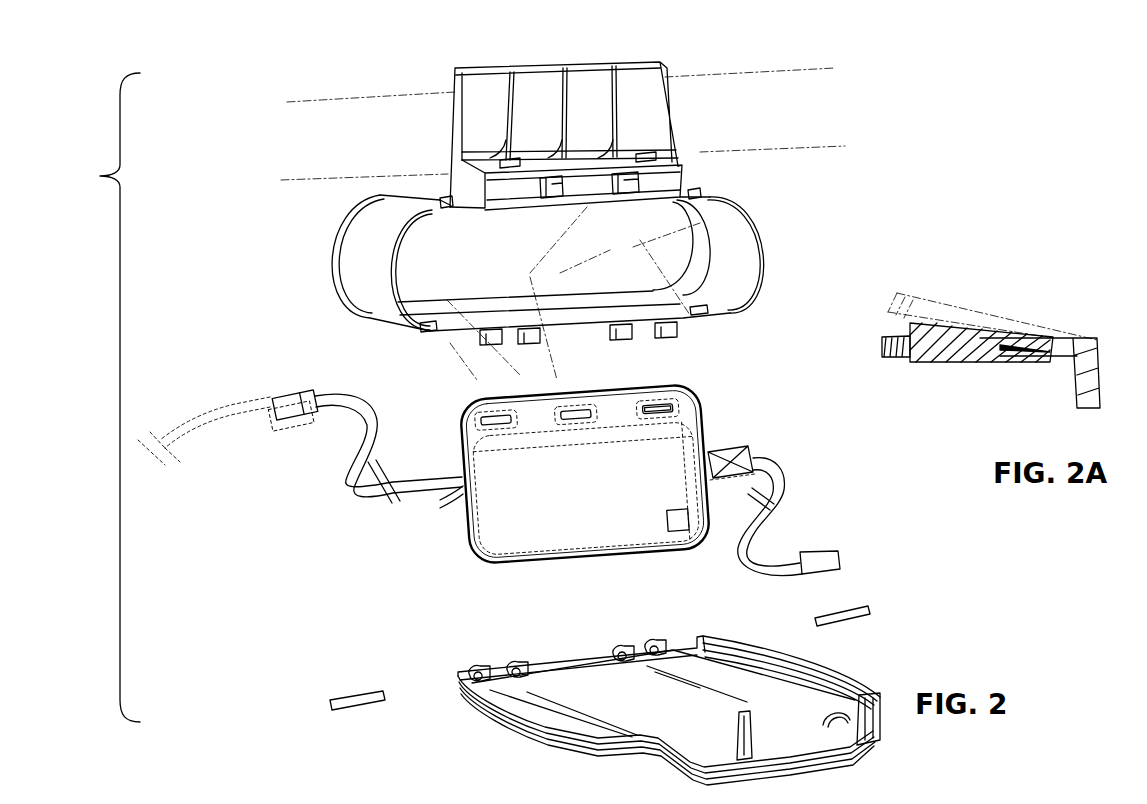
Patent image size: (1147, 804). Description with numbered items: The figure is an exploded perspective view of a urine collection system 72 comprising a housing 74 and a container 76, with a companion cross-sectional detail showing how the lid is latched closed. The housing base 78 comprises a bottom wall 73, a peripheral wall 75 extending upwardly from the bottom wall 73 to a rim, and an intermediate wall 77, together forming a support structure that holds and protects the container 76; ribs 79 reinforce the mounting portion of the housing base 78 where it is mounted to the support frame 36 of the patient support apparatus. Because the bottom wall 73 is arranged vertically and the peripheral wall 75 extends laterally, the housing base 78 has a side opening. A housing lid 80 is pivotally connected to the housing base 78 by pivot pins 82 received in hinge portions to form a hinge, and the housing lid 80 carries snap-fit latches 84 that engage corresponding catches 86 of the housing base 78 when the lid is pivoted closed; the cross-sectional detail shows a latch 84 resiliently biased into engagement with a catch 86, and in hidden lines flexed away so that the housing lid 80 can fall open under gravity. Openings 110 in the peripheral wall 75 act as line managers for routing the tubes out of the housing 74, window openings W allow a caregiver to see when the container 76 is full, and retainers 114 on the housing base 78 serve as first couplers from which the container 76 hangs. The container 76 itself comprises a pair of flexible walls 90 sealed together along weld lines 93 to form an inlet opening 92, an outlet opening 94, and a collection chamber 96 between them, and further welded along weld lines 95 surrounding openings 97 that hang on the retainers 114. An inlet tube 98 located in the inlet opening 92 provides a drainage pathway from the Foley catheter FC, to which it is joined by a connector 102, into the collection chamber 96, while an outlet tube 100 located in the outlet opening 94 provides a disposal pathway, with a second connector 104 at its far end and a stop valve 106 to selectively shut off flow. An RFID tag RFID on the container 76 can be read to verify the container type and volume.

In FIG. 2, the support frame 36 is at (562, 107).
In FIG. 2, the airbag module assembly 72 is at (100, 397).
In FIG. 2, the bottom wall 73 is at (500, 275).
In FIG. 2, the housing 74 is at (457, 136).
In FIG. 2, the peripheral wall 75 is at (383, 227).
In FIG. 2, the container 76 is at (546, 459).
In FIG. 2, the intermediate wall 77 is at (595, 145).
In FIG. 2, the housing base 78 is at (753, 243).
In FIG. 2, the ribs 79 is at (553, 85).
In FIG. 2, the housing lid 80 is at (703, 686).
In FIG. 2, the pivot pins 82 is at (598, 636).
In FIG. 2, the snap-fit latches 84 is at (808, 748).
In FIG. 2A, the snap-fit latches 84 is at (964, 334).
In FIG. 2, the catches 86 is at (568, 150).
In FIG. 2A, the catches 86 is at (981, 363).
In FIG. 2, the flexible walls 90 is at (430, 508).
In FIG. 2, the inlet opening 92 is at (586, 488).
In FIG. 2, the weld lines 93 is at (582, 442).
In FIG. 2, the outlet opening 94 is at (665, 481).
In FIG. 2, the weld lines 95 is at (606, 402).
In FIG. 2, the collection chamber 96 is at (544, 563).
In FIG. 2, the openings 97 is at (700, 417).
In FIG. 2, the inlet tube 98 is at (377, 448).
In FIG. 2, the outlet tube 100 is at (798, 513).
In FIG. 2, the connector 102 is at (293, 386).
In FIG. 2, the second connector 104 is at (834, 537).
In FIG. 2, the stop valve 106 is at (761, 442).
In FIG. 2, the openings 110 is at (583, 234).
In FIG. 2, the retainers 114 is at (573, 293).
In FIG. 2, the Foley catheter FC is at (204, 413).
In FIG. 2, the radio frequency identification tag RFID is at (703, 548).
In FIG. 2, the window openings W is at (579, 642).